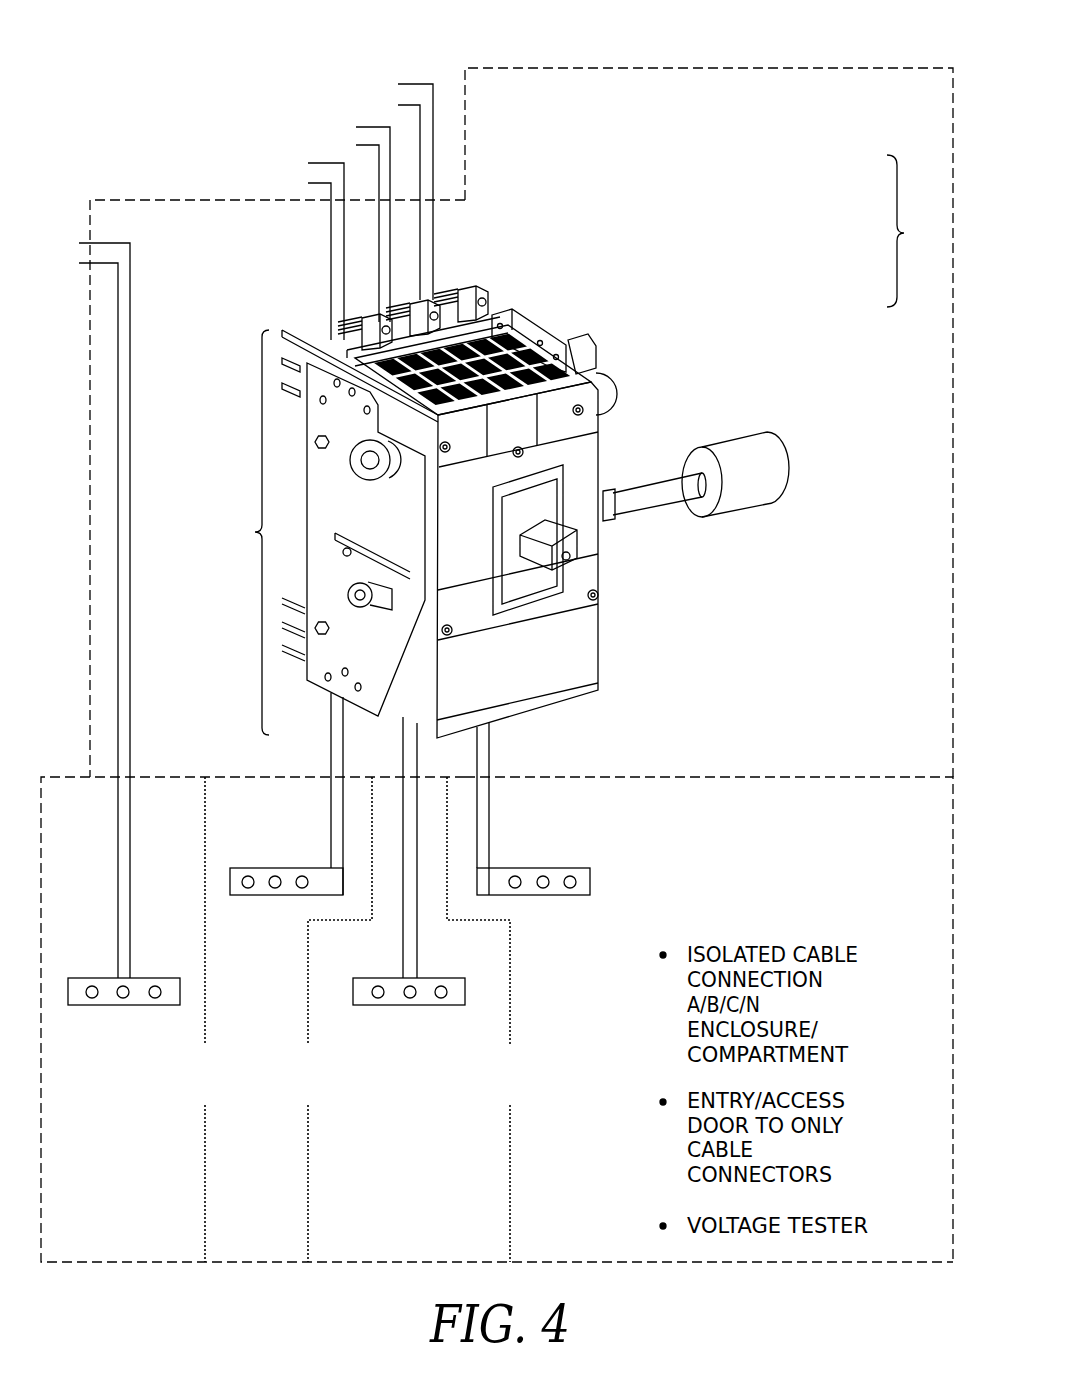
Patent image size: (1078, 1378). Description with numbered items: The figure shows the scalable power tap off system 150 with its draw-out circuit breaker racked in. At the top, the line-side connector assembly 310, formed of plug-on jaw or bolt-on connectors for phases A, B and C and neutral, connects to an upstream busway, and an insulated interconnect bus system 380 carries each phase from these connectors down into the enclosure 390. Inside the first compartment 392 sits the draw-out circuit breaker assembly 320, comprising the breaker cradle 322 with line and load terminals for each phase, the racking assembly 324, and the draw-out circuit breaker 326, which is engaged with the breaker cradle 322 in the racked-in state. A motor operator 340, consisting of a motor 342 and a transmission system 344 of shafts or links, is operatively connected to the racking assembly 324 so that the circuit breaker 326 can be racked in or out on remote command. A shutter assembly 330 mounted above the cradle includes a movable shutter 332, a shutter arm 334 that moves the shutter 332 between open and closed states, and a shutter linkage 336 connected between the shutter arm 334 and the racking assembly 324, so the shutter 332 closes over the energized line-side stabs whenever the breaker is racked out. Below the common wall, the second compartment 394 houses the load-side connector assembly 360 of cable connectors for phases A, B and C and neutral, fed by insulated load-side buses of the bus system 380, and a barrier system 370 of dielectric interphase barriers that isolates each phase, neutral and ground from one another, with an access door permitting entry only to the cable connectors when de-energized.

The scalable power tap off system 150 is at (876, 46).
The line-side connector assembly 310 is at (528, 183).
The draw-out circuit breaker assembly 320 is at (432, 505).
The breaker cradle 322 is at (385, 660).
The racking assembly 324 is at (510, 502).
The draw-out circuit breaker 326 is at (503, 650).
The shutter assembly 330 is at (650, 285).
The shutter 332 is at (516, 297).
The shutter arm 334 is at (553, 321).
The shutter linkage 336 is at (586, 337).
The motor operator 340 is at (728, 437).
The motor 342 is at (750, 491).
The transmission system 344 is at (680, 494).
The load-side connector assembly 360 is at (329, 984).
The barrier system 370 is at (408, 1208).
The insulated interconnect bus system 380 is at (652, 840).
The enclosure 390 is at (143, 200).
The first compartment 392 is at (930, 763).
The second compartment 394 is at (52, 775).